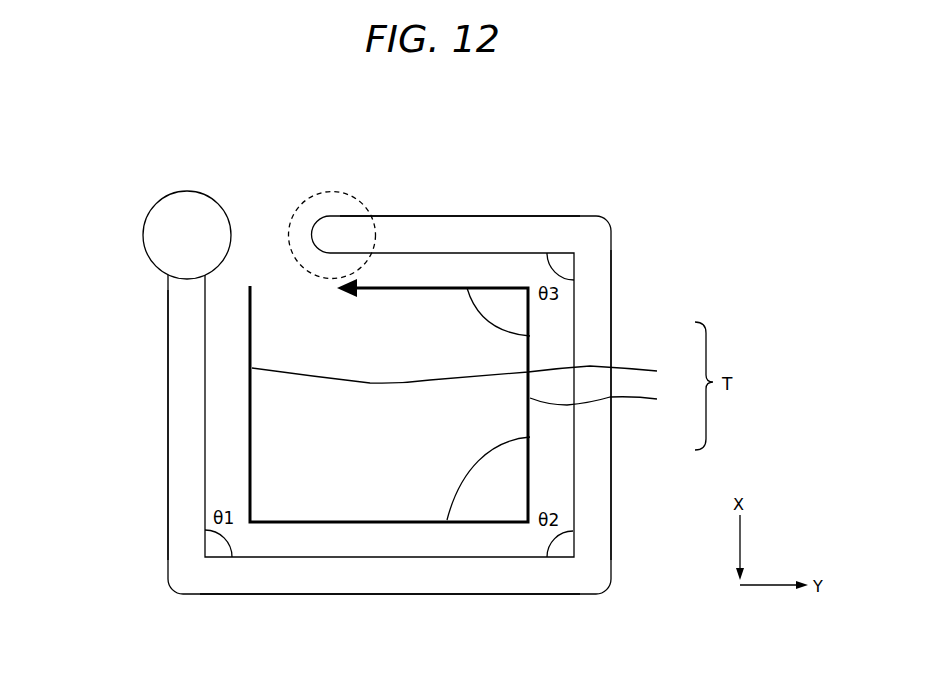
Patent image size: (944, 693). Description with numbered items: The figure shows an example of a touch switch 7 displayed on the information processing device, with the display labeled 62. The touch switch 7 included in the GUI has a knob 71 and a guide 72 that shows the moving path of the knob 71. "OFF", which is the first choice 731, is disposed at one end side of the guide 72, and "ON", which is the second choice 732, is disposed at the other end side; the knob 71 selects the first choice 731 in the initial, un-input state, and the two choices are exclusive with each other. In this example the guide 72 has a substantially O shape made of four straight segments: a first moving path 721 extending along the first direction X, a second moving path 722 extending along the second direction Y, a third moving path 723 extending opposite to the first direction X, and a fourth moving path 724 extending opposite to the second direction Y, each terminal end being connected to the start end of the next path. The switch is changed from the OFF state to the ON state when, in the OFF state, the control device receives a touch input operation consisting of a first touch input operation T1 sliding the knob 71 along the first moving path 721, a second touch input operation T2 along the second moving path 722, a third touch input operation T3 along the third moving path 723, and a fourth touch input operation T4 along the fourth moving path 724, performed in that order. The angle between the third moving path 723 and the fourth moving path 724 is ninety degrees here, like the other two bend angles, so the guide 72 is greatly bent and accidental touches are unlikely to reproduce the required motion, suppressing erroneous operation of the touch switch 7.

The display unit 62 is at (73, 100).
The touch switch 7 is at (509, 148).
The knob 71 is at (162, 233).
The guide 72 is at (160, 440).
The first moving path 721 is at (187, 352).
The second moving path 722 is at (391, 580).
The third moving path 723 is at (600, 488).
The fourth moving path 724 is at (425, 236).
The first choice 731 is at (191, 133).
The second choice 732 is at (333, 133).
The first touch input operation T1 is at (467, 372).
The second touch input operation T2 is at (530, 437).
The third touch input operation T3 is at (606, 402).
The fourth touch input operation T4 is at (530, 337).